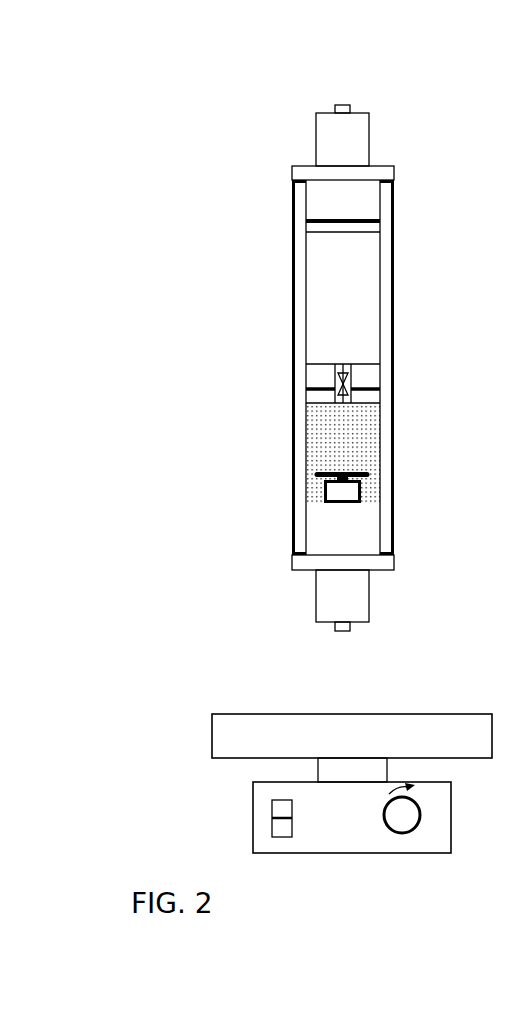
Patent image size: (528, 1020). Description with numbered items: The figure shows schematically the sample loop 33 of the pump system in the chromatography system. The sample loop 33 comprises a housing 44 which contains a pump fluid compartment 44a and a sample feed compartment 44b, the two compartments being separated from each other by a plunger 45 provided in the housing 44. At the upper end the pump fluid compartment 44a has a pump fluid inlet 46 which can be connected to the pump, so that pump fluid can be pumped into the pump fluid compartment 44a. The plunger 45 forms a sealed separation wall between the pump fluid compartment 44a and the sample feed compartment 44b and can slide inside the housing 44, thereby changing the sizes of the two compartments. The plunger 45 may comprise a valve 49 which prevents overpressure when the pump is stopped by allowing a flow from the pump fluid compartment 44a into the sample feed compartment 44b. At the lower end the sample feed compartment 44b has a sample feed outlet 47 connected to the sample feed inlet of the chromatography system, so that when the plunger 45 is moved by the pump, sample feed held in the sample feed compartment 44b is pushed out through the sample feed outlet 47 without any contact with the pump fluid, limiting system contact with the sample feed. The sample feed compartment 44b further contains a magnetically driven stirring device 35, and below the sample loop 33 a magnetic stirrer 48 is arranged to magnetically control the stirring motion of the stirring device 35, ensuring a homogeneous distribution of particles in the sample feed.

The sample loop 33 is at (273, 183).
The pump fluid inlet 46 is at (343, 104).
The housing 44 is at (300, 472).
The pump fluid compartment 44a is at (327, 277).
The sample feed compartment 44b is at (358, 437).
The plunger 45 is at (327, 388).
The valve 49 is at (347, 372).
The magnetically driven stirring device 35 is at (335, 491).
The sample feed outlet 47 is at (340, 633).
The magnetic stirrer 48 is at (222, 733).